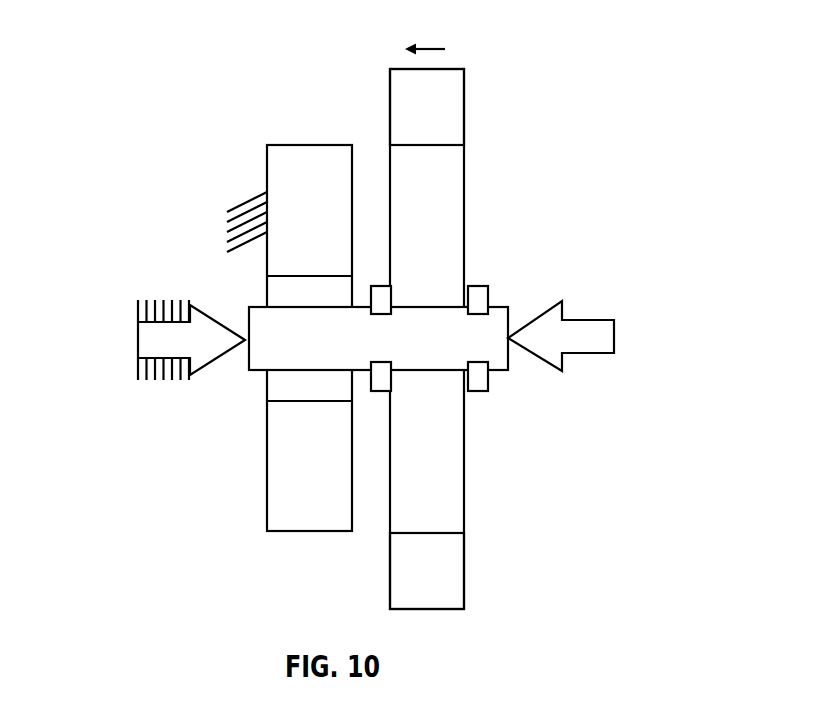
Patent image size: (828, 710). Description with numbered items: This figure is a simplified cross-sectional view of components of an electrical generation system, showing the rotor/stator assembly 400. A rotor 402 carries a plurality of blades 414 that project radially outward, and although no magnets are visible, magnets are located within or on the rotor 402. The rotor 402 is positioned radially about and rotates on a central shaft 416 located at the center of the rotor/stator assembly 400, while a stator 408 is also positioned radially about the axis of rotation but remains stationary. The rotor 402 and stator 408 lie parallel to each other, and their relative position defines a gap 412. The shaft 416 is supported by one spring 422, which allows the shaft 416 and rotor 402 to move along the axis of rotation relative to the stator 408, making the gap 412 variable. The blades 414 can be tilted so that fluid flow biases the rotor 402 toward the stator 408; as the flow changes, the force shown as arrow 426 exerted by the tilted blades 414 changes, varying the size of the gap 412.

The rotor/stator assembly 400 is at (184, 42).
The rotor 402 is at (465, 222).
The stator 408 is at (267, 471).
The gap 412 is at (363, 547).
The blades 414 is at (465, 115).
The shaft 416 is at (509, 362).
The spring 422 is at (136, 345).
The arrow 426 is at (436, 48).